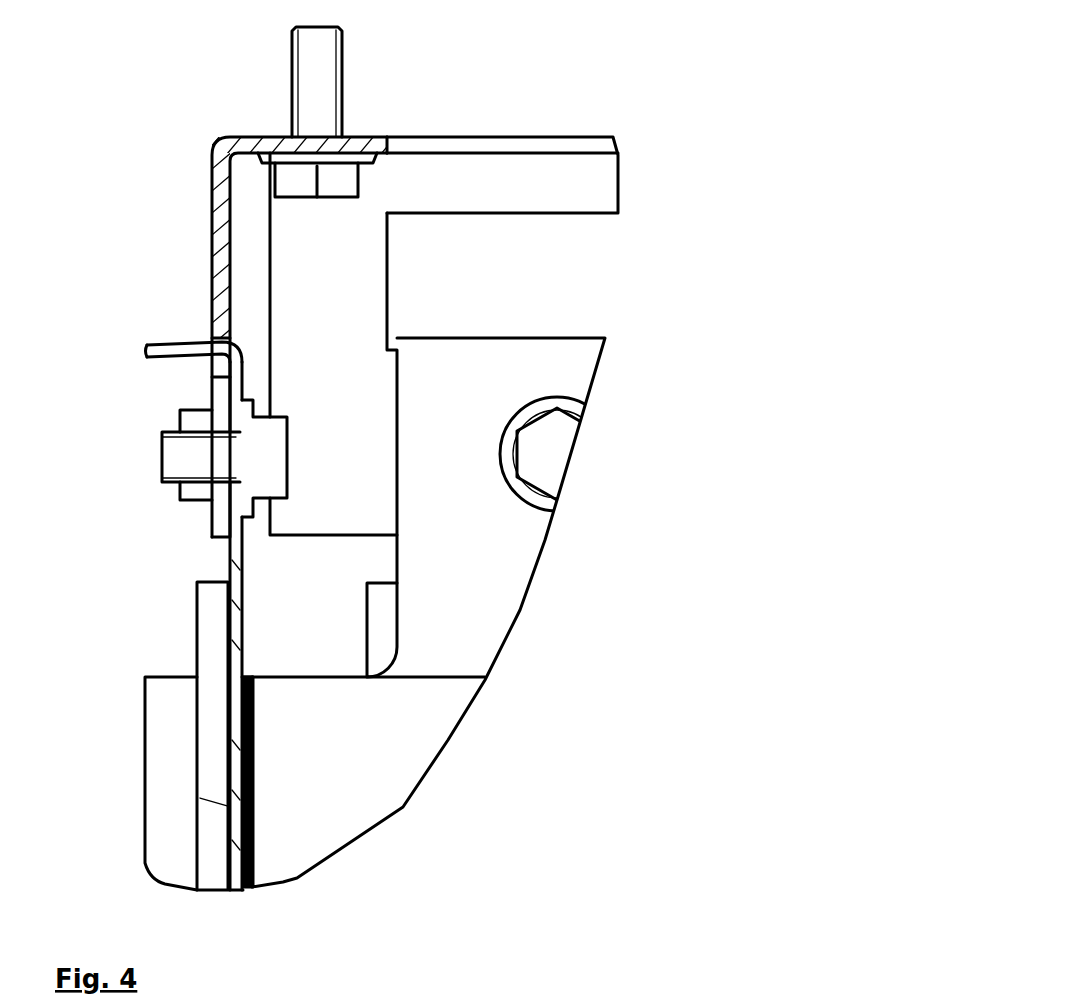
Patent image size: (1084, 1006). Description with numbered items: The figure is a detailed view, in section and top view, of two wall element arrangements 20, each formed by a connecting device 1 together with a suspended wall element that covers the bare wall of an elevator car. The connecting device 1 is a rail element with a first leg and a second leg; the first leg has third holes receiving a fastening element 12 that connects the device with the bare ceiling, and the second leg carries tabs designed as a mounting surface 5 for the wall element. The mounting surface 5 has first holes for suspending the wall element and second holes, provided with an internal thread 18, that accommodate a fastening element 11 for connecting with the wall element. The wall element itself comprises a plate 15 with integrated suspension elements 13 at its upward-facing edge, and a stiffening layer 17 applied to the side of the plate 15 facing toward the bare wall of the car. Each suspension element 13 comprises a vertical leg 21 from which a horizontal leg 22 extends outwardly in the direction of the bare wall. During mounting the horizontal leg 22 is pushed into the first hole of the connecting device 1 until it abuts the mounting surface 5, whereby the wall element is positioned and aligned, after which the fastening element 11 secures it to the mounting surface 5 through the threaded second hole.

The connecting device 1 is at (543, 172).
The mounting surface 5 is at (229, 271).
The fastening element 11 is at (180, 456).
The fastening element 12 is at (318, 80).
The suspension element 13 is at (440, 542).
The plate 15 is at (237, 687).
The stiffening layer 17 is at (218, 742).
The internal thread 18 is at (195, 495).
The wall element arrangement 20 is at (187, 162).
The vertical leg 21 is at (237, 560).
The horizontal leg 22 is at (192, 347).